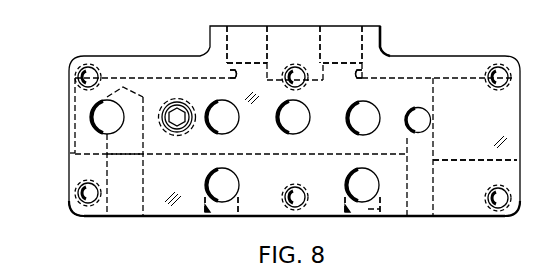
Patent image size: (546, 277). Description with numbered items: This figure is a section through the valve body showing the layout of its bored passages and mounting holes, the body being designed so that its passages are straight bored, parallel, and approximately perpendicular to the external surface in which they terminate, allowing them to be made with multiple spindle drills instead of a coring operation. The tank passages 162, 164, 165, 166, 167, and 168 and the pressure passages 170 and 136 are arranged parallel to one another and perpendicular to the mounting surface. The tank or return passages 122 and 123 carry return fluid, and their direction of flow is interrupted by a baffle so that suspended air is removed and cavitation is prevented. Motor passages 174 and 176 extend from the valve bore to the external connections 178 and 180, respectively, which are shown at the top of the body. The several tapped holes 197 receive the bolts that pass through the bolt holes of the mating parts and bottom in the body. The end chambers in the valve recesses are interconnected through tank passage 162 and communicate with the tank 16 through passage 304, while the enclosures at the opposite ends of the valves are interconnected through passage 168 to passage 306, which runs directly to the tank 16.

The tank 16 is at (541, 7).
The tank passage 122 is at (207, 208).
The tank passage 123 is at (347, 208).
The pressure passage 136 is at (297, 131).
The tank passage 162 is at (91, 115).
The tank passage 164 is at (226, 131).
The tank passage 165 is at (239, 174).
The tank passage 166 is at (358, 103).
The tank passage 167 is at (365, 168).
The tank passage 168 is at (419, 108).
The pressure passage 170 is at (186, 106).
The motor passage 174 is at (232, 73).
The motor passage 176 is at (357, 72).
The external connection 178 is at (240, 30).
The external connection 180 is at (337, 30).
The tapped hole 197 is at (97, 72).
The passage 304 is at (143, 170).
The passage 306 is at (427, 178).